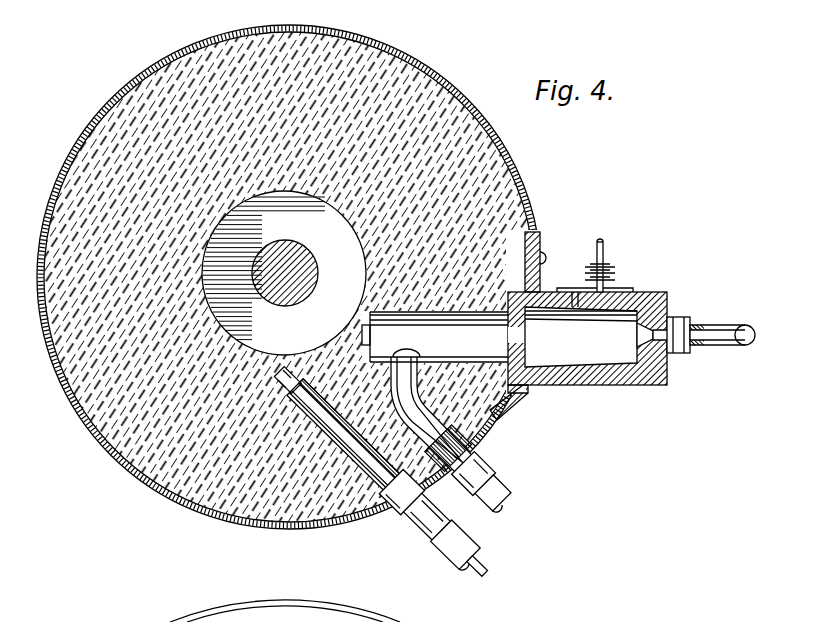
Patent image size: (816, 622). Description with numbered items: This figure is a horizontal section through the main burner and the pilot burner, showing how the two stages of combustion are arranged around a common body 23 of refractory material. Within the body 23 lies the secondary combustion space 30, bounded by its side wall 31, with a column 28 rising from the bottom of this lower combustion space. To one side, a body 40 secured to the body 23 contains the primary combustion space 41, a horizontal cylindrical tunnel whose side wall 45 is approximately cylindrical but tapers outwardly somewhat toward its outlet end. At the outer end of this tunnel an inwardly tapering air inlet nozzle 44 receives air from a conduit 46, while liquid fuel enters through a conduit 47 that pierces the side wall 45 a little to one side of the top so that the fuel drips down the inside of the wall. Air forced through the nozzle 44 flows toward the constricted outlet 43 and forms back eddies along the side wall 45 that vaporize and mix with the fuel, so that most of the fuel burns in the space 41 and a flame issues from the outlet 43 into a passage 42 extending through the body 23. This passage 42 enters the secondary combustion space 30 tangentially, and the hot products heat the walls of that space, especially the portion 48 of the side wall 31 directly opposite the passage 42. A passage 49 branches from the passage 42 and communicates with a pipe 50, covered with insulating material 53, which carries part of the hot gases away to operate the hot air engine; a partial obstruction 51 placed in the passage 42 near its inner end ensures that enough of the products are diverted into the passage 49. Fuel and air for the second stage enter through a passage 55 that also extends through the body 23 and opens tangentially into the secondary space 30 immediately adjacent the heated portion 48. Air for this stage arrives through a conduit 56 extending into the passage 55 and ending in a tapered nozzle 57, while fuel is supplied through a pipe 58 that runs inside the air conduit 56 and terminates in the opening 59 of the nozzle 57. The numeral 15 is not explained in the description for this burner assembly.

The body 23 is at (411, 97).
The side wall 31 is at (240, 208).
The secondary combustion space 30 is at (301, 273).
The column 28 is at (309, 292).
The portion of side wall 48 is at (226, 330).
The inlet pipe 15 is at (240, 338).
The opening of nozzle 59 is at (288, 375).
The partial obstruction 51 is at (386, 339).
The passage 42 is at (439, 337).
The body 40 is at (633, 297).
The constricted outlet 43 is at (521, 339).
The primary combustion space 41 is at (622, 352).
The side wall 45 is at (575, 292).
The conduit 47 is at (604, 249).
The air inlet nozzle 44 is at (665, 337).
The conduit 46 is at (731, 343).
The passage 49 is at (433, 427).
The pipe 50 is at (498, 478).
The insulating material 53 is at (512, 493).
The passage 55 is at (290, 388).
The tapered nozzle 57 is at (281, 380).
The conduit 56 is at (455, 572).
The pipe 58 is at (486, 578).